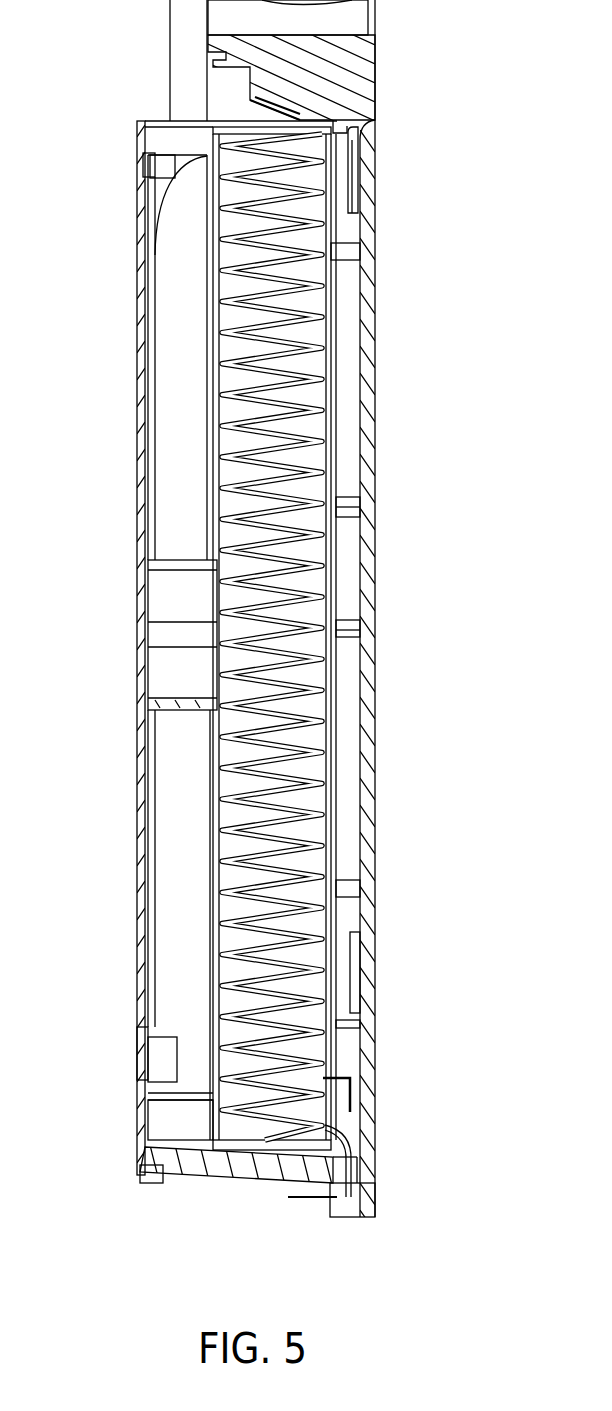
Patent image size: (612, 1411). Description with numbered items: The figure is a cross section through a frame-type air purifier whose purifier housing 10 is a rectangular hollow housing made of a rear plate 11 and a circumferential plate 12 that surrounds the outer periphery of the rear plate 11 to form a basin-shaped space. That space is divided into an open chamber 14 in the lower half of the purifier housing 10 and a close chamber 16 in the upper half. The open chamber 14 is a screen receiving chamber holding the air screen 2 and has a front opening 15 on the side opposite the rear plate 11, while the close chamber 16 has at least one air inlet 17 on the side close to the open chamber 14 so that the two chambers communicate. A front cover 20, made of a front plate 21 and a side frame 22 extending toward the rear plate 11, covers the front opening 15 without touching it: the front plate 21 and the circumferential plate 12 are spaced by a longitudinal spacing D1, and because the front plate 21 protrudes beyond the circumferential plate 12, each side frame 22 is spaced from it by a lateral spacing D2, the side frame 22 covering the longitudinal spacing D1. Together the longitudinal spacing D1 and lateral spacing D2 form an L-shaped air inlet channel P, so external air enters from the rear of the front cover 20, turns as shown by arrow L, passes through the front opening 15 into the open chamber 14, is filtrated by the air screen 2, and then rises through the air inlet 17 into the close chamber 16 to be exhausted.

The air screen 2 is at (332, 537).
The purifier housing 10 is at (189, 653).
The rear plate 11 is at (140, 322).
The circumferential plate 12 is at (172, 393).
The open chamber 14 is at (180, 835).
The front opening 15 is at (347, 1137).
The close chamber 16 is at (167, 43).
The air inlet 17 is at (168, 121).
The front cover 20 is at (373, 163).
The front plate 21 is at (365, 220).
The side frame 22 is at (357, 1205).
The arrow L is at (362, 1085).
The L-shaped air inlet channel P is at (360, 1173).
The longitudinal spacing D1 is at (368, 1217).
The lateral spacing D2 is at (337, 1210).